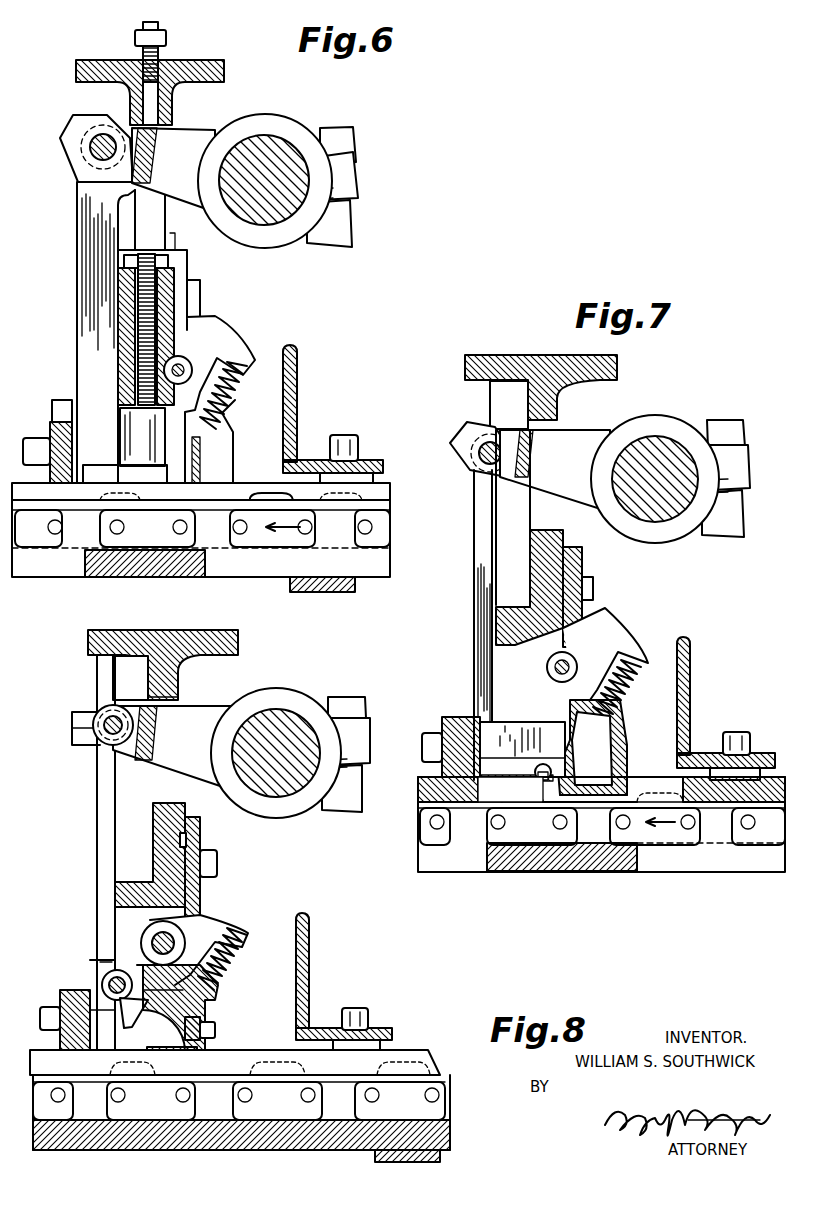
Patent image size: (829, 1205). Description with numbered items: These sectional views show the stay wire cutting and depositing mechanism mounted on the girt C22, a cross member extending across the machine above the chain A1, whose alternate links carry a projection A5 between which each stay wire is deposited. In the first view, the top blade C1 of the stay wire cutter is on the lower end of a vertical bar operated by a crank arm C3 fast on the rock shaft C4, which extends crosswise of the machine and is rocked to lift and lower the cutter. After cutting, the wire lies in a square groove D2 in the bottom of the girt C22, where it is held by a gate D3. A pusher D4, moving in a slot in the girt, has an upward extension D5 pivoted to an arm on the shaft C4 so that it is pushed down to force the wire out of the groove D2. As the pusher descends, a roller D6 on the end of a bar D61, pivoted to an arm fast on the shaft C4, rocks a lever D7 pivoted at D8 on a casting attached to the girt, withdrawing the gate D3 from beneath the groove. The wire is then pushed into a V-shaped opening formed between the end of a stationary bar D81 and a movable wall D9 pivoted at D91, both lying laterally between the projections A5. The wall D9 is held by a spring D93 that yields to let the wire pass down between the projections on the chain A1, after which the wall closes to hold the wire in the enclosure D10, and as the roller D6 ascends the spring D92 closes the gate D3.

In FIG. 6, the girt C22 is at (205, 62).
In FIG. 7, the girt C22 is at (503, 357).
In FIG. 8, the girt C22 is at (240, 640).
In FIG. 6, the crank arm C3 is at (190, 146).
In FIG. 6, the rock shaft C4 is at (275, 145).
In FIG. 7, the rock shaft C4 is at (662, 440).
In FIG. 8, the rock shaft C4 is at (280, 720).
In FIG. 6, the top blade C1 is at (130, 428).
In FIG. 6, the projection A5 is at (268, 494).
In FIG. 6, the chain A1 is at (201, 546).
In FIG. 7, the chain A1 is at (720, 823).
In FIG. 8, the chain A1 is at (210, 1108).
In FIG. 7, the upward extension D5 is at (481, 592).
In FIG. 7, the pivot D91 is at (600, 640).
In FIG. 7, the spring D93 is at (620, 700).
In FIG. 7, the pusher D4 is at (513, 740).
In FIG. 7, the groove D2 is at (556, 768).
In FIG. 8, the groove D2 is at (157, 1053).
In FIG. 7, the stationary bar D81 is at (520, 798).
In FIG. 8, the stationary bar D81 is at (403, 1056).
In FIG. 7, the movable wall D9 is at (585, 798).
In FIG. 7, the enclosure D10 is at (593, 807).
In FIG. 8, the bar D61 is at (98, 838).
In FIG. 8, the pivot D8 is at (147, 938).
In FIG. 8, the roller D6 is at (102, 983).
In FIG. 8, the spring D92 is at (232, 960).
In FIG. 8, the lever D7 is at (215, 1000).
In FIG. 8, the gate D3 is at (172, 1067).